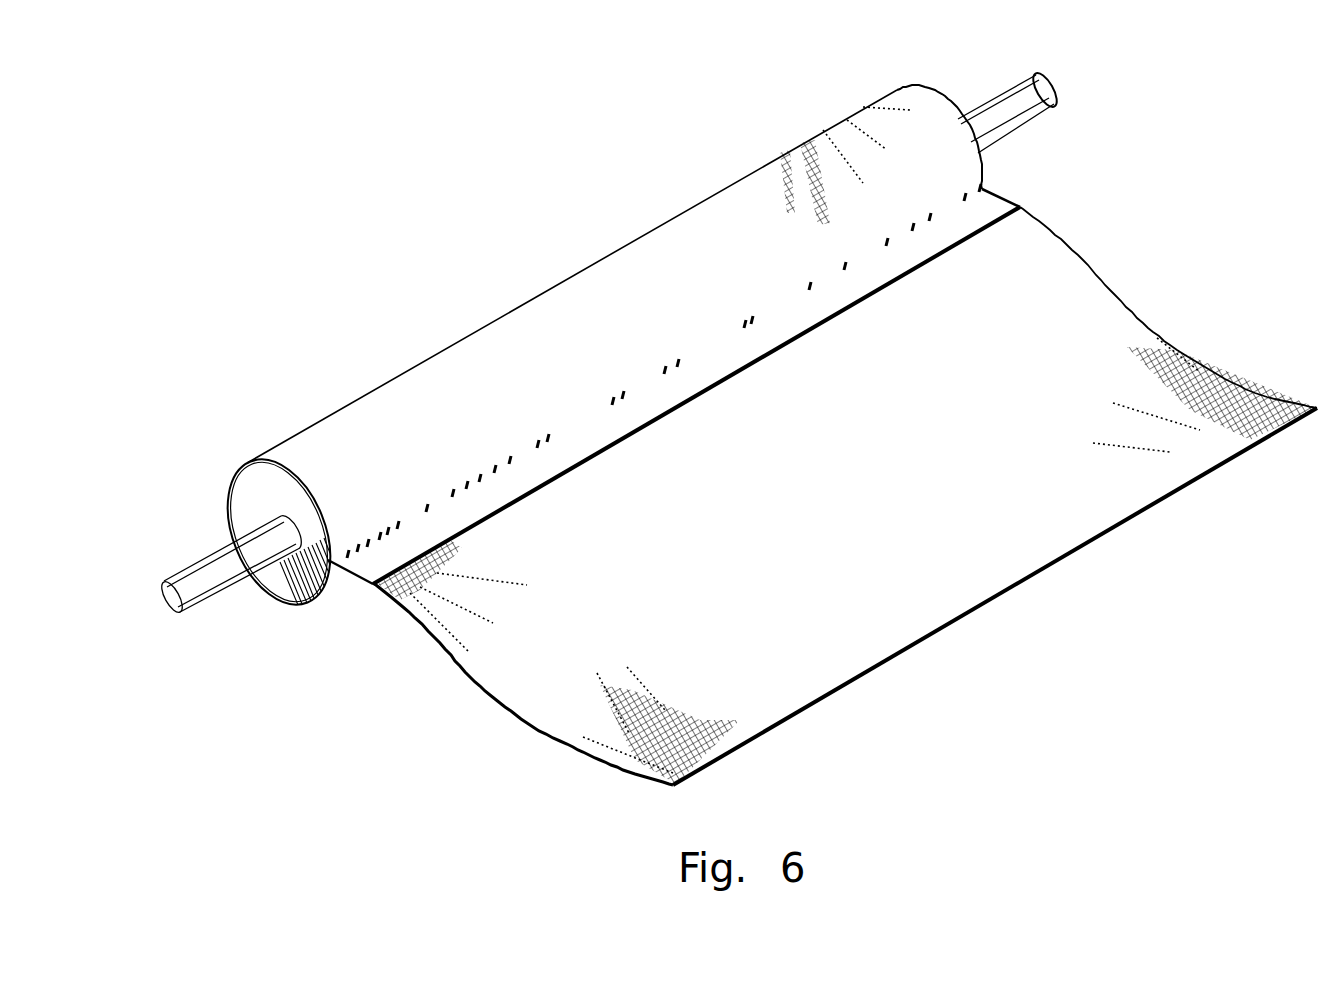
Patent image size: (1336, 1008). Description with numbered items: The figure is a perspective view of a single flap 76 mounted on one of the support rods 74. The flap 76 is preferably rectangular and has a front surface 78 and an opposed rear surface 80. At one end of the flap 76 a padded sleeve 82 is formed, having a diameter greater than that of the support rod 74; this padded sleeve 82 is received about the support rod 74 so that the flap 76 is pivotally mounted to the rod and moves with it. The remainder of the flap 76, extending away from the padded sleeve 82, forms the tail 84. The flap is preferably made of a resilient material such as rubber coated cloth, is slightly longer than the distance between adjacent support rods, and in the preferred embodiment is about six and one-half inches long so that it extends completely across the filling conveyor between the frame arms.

The support rod 74 is at (200, 587).
The flap 76 is at (1140, 262).
The front surface 78 is at (573, 754).
The rear surface 80 is at (850, 502).
The padded sleeve 82 is at (295, 452).
The tail 84 is at (1058, 533).